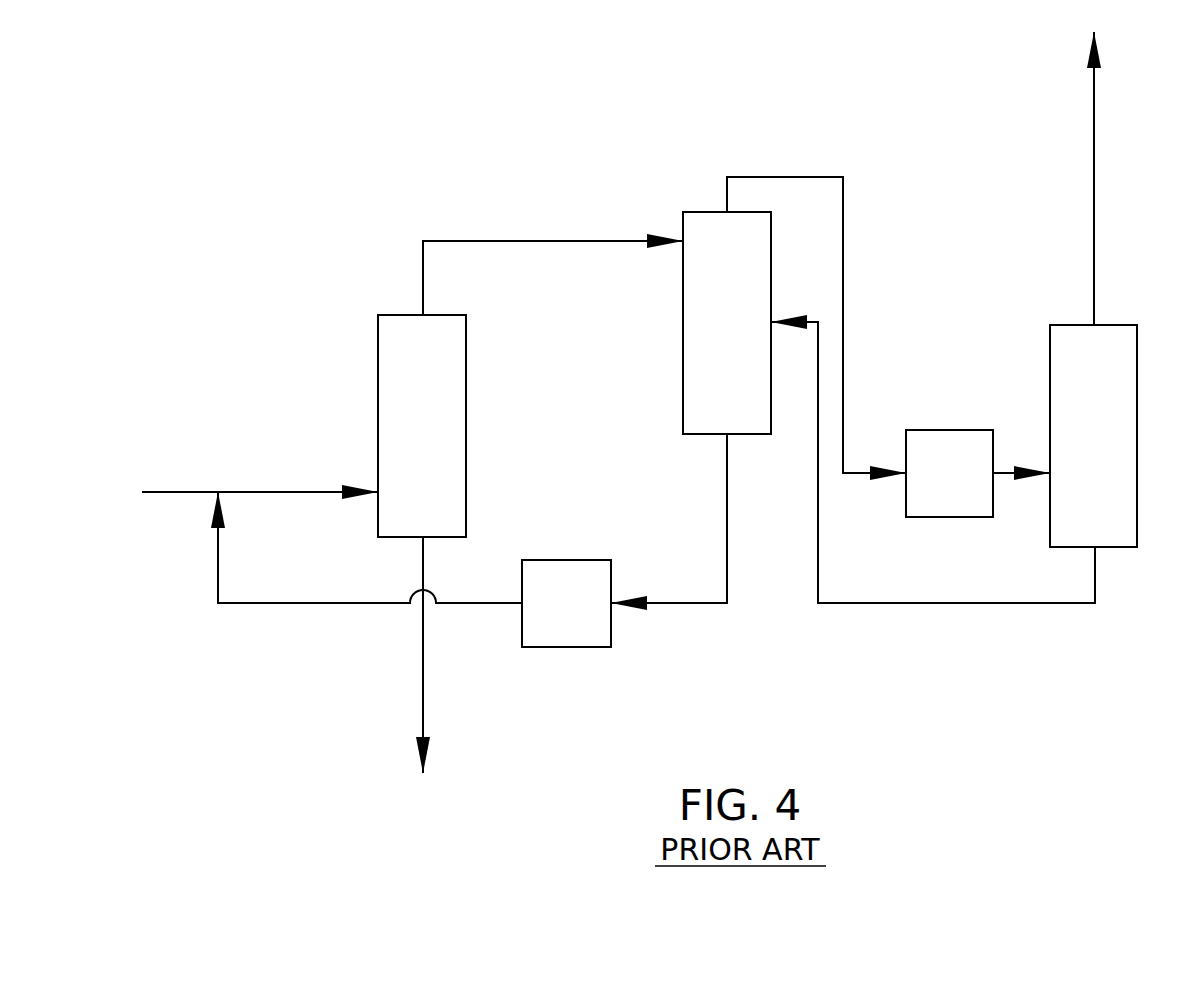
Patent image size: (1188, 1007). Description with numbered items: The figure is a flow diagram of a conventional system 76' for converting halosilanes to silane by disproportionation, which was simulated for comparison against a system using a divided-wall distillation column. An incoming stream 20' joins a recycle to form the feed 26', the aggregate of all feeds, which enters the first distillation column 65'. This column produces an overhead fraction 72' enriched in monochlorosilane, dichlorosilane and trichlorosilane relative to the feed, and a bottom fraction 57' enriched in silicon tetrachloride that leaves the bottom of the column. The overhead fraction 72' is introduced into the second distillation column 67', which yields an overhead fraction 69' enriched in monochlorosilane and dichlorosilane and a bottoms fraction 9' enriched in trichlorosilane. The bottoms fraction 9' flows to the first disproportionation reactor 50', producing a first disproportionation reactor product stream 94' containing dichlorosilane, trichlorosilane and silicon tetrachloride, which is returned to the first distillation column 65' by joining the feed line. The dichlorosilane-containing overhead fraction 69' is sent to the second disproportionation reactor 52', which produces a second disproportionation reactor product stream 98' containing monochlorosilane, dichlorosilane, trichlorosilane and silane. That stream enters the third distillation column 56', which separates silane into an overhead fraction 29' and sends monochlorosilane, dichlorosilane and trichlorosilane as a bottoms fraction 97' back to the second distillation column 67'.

The conventional system 76' is at (335, 55).
The feed stream 20' is at (167, 461).
The feed 26' is at (298, 461).
The first distillation column 65' is at (422, 426).
The overhead fraction 72' is at (553, 249).
The second distillation column 67' is at (727, 323).
The overhead fraction 69' is at (824, 325).
The second disproportionation reactor 52' is at (949, 473).
The second disproportionation reactor product stream 98' is at (1020, 427).
The third distillation column 56' is at (1093, 436).
The overhead fraction 29' is at (1136, 178).
The bottoms fraction 97' is at (933, 485).
The bottoms fraction 9' is at (671, 545).
The first disproportionation reactor 50' is at (566, 603).
The first disproportionation reactor product stream 94' is at (370, 577).
The bottom fraction 57' is at (470, 655).